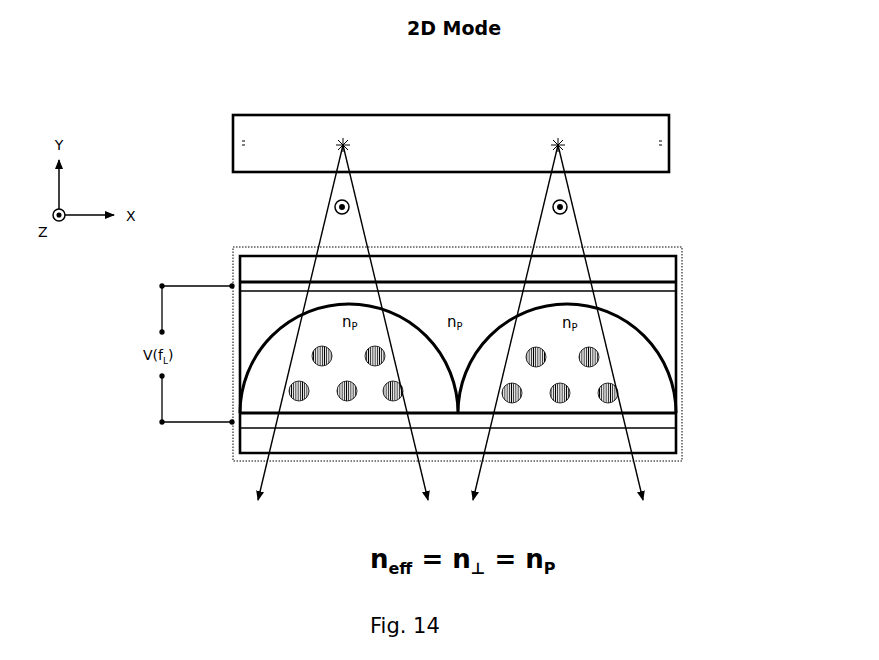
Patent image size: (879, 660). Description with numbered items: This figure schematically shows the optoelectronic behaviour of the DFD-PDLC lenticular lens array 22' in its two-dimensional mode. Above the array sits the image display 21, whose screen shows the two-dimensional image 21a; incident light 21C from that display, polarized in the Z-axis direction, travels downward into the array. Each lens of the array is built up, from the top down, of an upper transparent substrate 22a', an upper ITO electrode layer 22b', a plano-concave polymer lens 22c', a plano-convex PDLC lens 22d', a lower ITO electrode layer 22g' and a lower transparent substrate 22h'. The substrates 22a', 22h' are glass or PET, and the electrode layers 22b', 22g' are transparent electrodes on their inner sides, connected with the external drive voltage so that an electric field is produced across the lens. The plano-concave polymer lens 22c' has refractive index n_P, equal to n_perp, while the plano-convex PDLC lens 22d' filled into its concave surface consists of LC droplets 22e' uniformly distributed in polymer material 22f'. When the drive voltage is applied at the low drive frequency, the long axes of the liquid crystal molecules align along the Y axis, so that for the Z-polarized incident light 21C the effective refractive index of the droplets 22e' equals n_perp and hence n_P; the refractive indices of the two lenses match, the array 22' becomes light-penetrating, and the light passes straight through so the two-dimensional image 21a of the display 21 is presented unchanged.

The image display 21 is at (669, 115).
The 2D image 21a is at (664, 144).
The incident light 21C is at (542, 208).
The DFD-PDLC lenticular lens array 22' is at (486, 326).
The upper transparent substrate 22a' is at (500, 266).
The upper ITO electrode layer 22b' is at (500, 292).
The plano-concave polymer lens 22c' is at (496, 352).
The plano-convex PDLC lens 22d' is at (504, 388).
The LC droplets 22e' is at (467, 374).
The polymer material 22f' is at (458, 353).
The lower ITO electrode layer 22g' is at (500, 416).
The lower transparent substrate 22h' is at (499, 443).